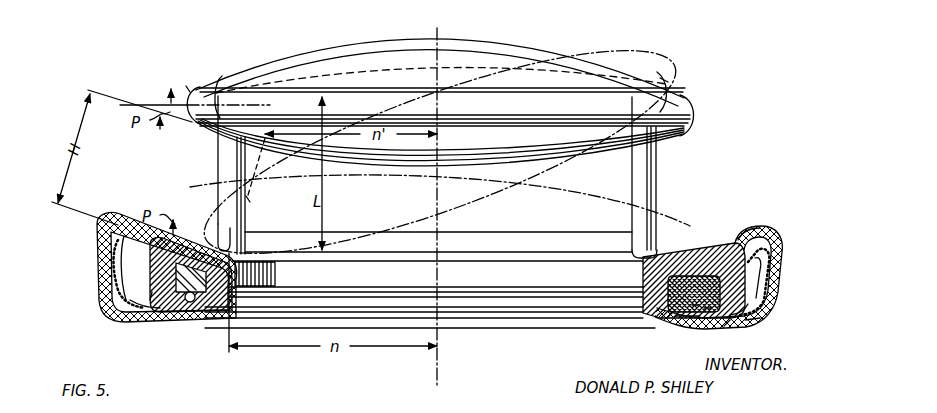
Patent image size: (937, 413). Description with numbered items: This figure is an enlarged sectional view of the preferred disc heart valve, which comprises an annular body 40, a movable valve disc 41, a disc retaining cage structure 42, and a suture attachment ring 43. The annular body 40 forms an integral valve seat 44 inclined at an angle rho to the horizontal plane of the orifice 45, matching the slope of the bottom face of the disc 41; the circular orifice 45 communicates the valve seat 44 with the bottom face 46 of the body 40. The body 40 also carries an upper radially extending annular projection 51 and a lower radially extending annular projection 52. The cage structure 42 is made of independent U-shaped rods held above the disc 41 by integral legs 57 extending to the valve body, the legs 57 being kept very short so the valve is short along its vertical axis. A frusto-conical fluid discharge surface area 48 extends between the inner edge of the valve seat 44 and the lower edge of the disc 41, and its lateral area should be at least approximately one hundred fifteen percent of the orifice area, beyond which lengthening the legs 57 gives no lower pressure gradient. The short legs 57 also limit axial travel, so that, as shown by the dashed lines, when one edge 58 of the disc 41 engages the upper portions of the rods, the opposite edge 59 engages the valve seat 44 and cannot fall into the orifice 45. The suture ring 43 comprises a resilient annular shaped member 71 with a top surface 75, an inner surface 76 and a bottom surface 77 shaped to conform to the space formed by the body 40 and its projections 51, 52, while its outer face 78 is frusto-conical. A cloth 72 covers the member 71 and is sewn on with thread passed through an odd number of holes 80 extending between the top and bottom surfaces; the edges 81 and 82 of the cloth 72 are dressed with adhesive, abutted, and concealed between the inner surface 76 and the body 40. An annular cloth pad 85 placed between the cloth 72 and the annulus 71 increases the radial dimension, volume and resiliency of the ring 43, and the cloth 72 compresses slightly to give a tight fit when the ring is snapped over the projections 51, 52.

The annular body 40 is at (612, 326).
The movable valve disc 41 is at (464, 152).
The disc retaining cage structure 42 is at (250, 57).
The suture attachment ring 43 is at (115, 319).
The valve seat 44 is at (230, 246).
The orifice 45 is at (640, 267).
The bottom face of the body 46 is at (184, 316).
The frusto-conical fluid discharge surface area 48 is at (248, 200).
The upper radially extending annular projection 51 is at (735, 240).
The lower radially extending annular projection 52 is at (160, 303).
The legs 57 is at (222, 163).
The edge of the disc 58 is at (666, 80).
The opposite edge of the disc 59 is at (188, 88).
The annular shaped member 71 is at (110, 296).
The cloth 72 is at (110, 278).
The top surface 75 is at (93, 239).
The inner surface 76 is at (187, 312).
The bottom surface 77 is at (150, 300).
The outer face 78 is at (97, 259).
The holes 80 is at (707, 309).
The edge of the cloth band 81 is at (677, 287).
The edge of the cloth band 82 is at (674, 319).
The annular cloth pad 85 is at (757, 319).